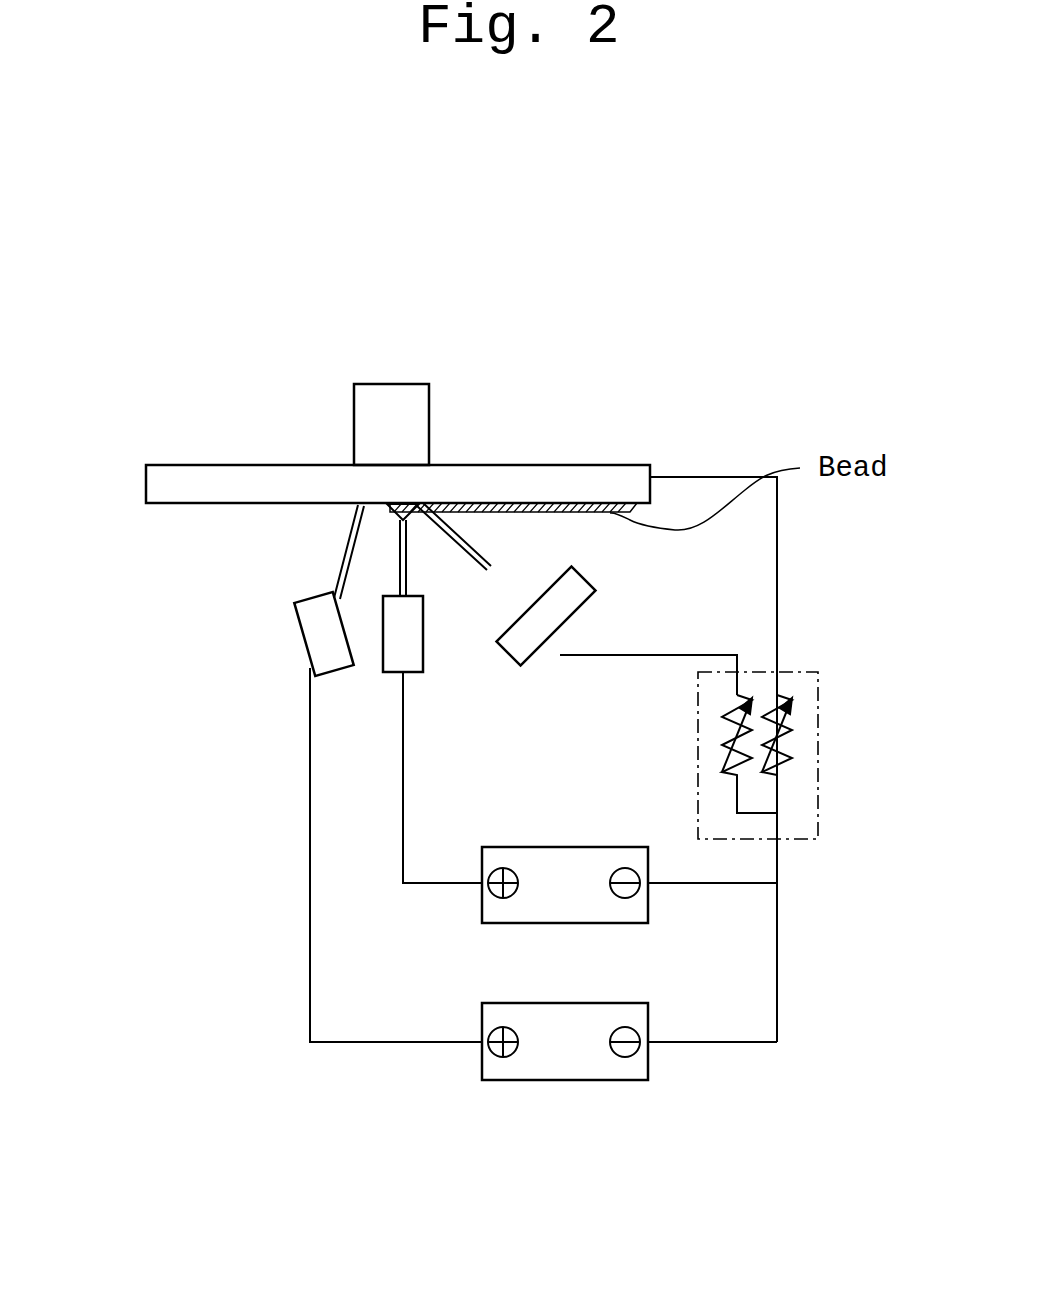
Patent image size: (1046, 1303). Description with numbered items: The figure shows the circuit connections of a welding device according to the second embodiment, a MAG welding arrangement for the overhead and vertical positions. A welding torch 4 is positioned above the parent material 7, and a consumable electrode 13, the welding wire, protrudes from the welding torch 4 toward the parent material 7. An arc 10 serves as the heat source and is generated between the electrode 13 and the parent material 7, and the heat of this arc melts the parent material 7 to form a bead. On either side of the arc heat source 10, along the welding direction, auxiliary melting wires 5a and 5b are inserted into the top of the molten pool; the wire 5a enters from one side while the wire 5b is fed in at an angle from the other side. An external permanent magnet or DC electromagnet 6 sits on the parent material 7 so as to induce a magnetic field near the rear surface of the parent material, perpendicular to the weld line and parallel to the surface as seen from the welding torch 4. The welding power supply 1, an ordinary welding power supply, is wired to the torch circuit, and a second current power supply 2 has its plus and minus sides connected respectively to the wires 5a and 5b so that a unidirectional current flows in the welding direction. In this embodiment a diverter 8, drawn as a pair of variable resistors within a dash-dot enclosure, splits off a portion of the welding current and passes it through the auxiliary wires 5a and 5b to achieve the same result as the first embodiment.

The welding power supply 1 is at (531, 853).
The current power supply 2 is at (540, 1072).
The welding torch 4 is at (423, 648).
The auxiliary wire 5a is at (342, 555).
The auxiliary wire 5b is at (467, 550).
The external permanent magnet or DC electromagnet 6 is at (396, 405).
The parent material 7 is at (155, 480).
The diverter 8 is at (818, 772).
The arc (heat source) 10 is at (408, 512).
The consumable electrode 13 is at (407, 567).